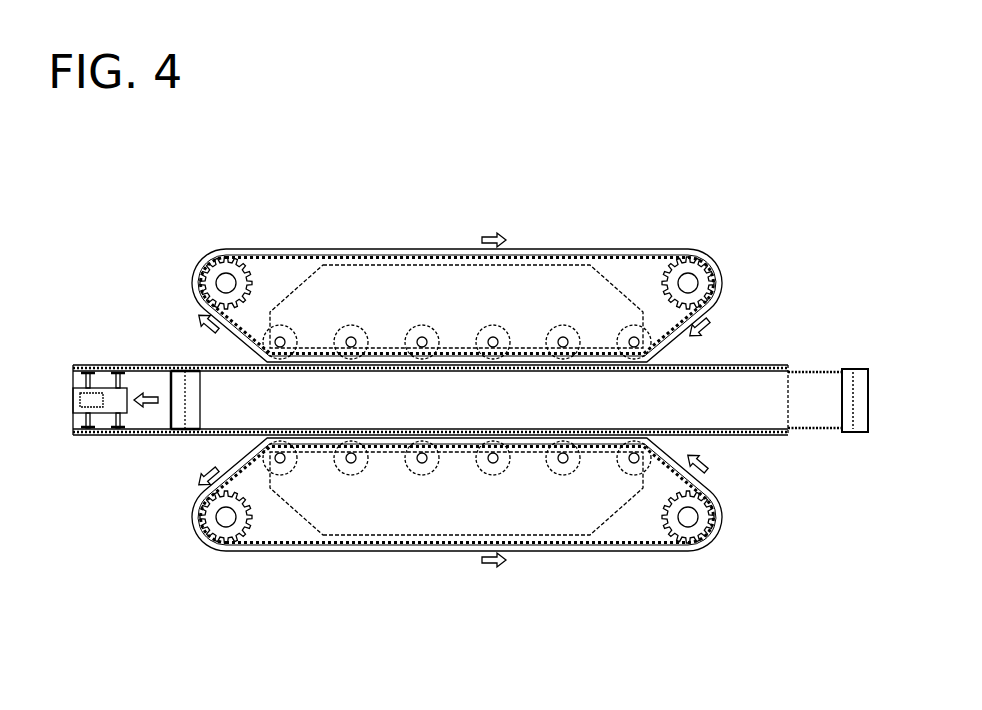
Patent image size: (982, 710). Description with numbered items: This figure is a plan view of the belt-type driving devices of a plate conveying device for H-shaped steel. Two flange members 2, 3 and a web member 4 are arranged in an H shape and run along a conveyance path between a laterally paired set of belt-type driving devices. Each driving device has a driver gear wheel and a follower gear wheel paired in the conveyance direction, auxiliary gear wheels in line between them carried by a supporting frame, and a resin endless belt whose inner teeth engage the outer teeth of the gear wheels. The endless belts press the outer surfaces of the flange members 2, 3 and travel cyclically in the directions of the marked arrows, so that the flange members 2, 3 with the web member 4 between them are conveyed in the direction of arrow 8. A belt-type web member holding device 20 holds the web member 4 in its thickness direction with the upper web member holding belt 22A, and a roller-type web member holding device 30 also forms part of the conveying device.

The flange member 2 is at (750, 365).
The flange member 3 is at (752, 437).
The web member 4 is at (790, 397).
The arrow 8 is at (150, 388).
The belt-type web member holding device 20 is at (836, 352).
The upper web member holding belt 22A is at (800, 430).
The roller-type web member holding device 30 is at (105, 437).